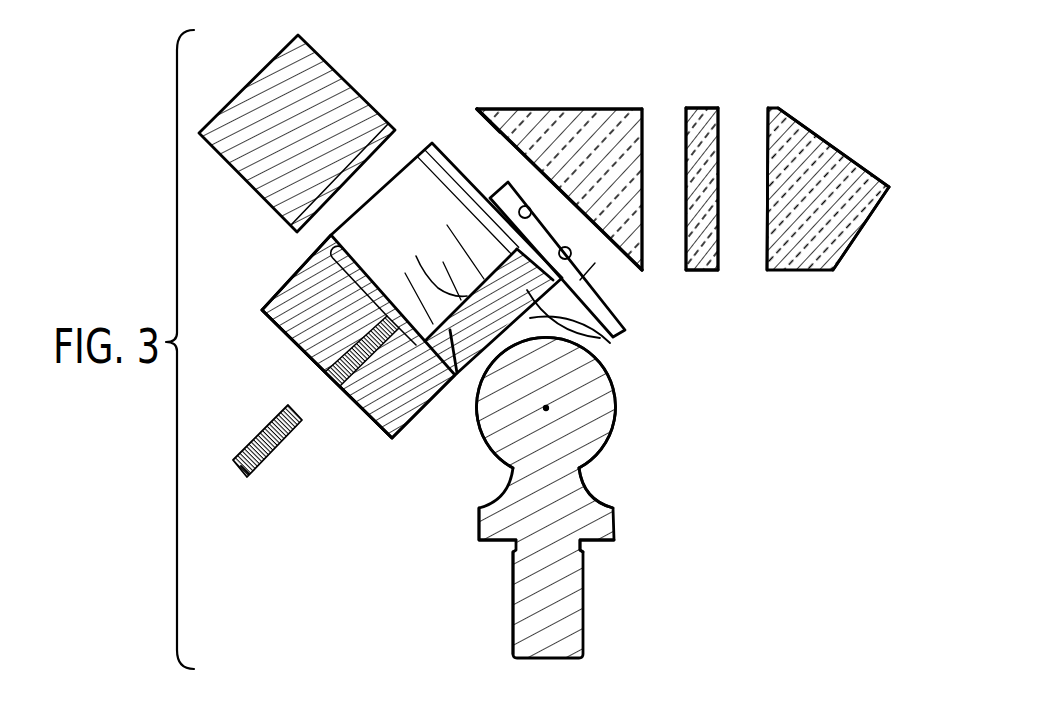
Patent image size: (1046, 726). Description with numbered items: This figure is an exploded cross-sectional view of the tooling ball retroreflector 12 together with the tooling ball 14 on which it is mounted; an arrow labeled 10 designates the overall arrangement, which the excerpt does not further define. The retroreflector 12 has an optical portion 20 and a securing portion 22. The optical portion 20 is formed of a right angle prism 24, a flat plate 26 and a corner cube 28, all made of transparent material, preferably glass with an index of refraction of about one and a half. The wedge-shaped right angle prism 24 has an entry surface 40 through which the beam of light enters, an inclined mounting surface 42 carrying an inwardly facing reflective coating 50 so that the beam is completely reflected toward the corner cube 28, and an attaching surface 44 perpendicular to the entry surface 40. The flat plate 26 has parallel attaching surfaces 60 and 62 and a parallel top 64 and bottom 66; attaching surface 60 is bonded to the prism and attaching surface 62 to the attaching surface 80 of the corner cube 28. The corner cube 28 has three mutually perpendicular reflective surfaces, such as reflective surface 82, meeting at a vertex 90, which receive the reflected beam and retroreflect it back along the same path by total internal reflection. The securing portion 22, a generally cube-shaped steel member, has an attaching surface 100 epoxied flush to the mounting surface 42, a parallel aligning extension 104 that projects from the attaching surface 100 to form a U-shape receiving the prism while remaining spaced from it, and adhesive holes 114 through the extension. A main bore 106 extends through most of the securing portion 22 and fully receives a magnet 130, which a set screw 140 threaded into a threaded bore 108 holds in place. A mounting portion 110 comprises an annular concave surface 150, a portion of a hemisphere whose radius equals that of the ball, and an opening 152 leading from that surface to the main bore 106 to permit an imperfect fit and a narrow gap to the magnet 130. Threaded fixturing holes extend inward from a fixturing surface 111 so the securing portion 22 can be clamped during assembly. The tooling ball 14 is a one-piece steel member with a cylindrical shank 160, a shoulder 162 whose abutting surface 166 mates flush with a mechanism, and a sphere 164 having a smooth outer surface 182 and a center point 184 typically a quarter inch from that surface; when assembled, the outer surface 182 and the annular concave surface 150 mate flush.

The mounting assembly 10 is at (790, 439).
The tooling ball retroreflector 12 is at (503, 53).
The tooling ball 14 is at (583, 593).
The optical portion 20 is at (756, 333).
The securing portion 22 is at (363, 417).
The right angle prism 24 is at (577, 122).
The flat plate 26 is at (713, 230).
The corner cube 28 is at (837, 233).
The entry surface 40 is at (622, 108).
The mounting surface 42 is at (477, 110).
The attaching surface 44 is at (643, 232).
The reflective coating 50 is at (508, 132).
The attaching surface 60 is at (684, 143).
The attaching surface 62 is at (720, 140).
The top 64 is at (702, 108).
The bottom 66 is at (703, 270).
The attaching surface 80 is at (765, 240).
The reflective surface 82 is at (807, 125).
The vertex 90 is at (887, 182).
The attaching surface 100 is at (440, 150).
The aligning extension 104 is at (597, 257).
The main bore 106 is at (330, 240).
The threaded bore 108 is at (327, 372).
The mounting portion 110 is at (459, 390).
The fixturing surface 111 is at (287, 285).
The adhesive holes 114 is at (565, 247).
The magnet 130 is at (262, 72).
The set screw 140 is at (252, 480).
The annular concave surface 150 is at (577, 333).
The opening 152 is at (438, 288).
The shank 160 is at (512, 600).
The shoulder 162 is at (479, 520).
The sphere 164 is at (597, 453).
The abutting surface 166 is at (602, 545).
The outer surface 182 is at (613, 397).
The center point 184 is at (546, 408).